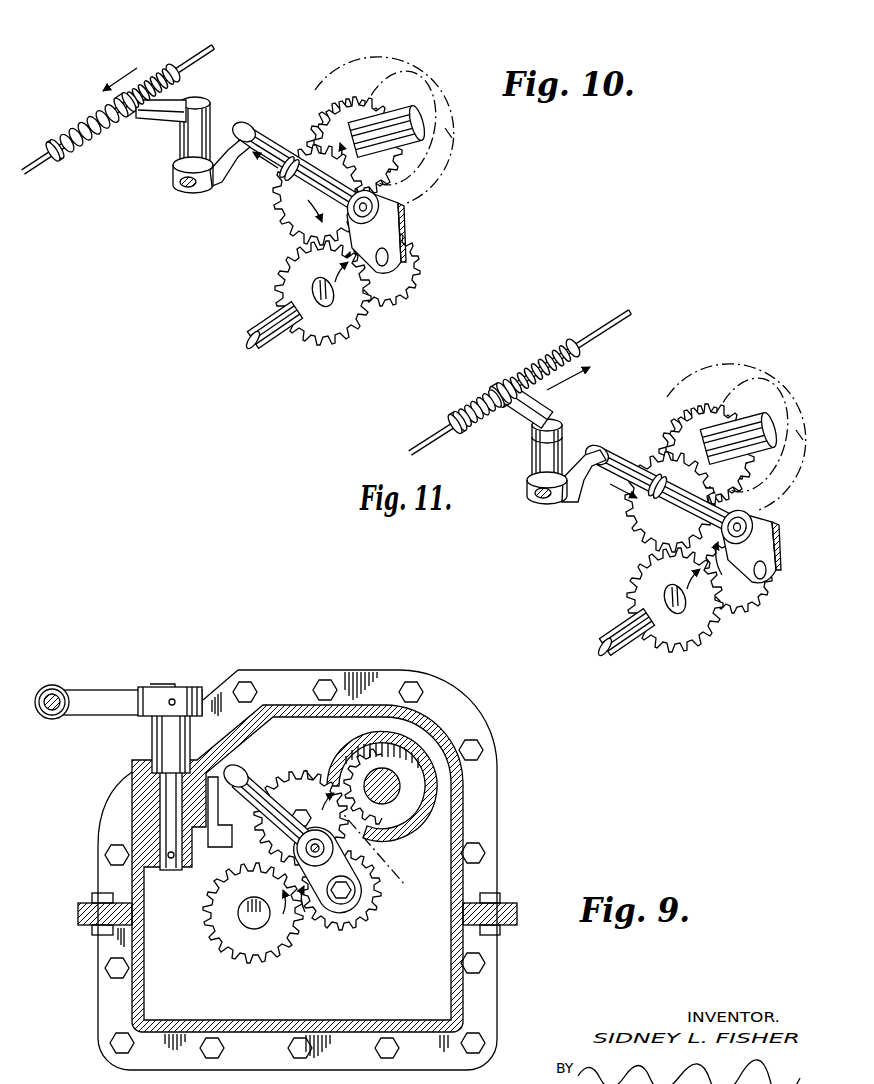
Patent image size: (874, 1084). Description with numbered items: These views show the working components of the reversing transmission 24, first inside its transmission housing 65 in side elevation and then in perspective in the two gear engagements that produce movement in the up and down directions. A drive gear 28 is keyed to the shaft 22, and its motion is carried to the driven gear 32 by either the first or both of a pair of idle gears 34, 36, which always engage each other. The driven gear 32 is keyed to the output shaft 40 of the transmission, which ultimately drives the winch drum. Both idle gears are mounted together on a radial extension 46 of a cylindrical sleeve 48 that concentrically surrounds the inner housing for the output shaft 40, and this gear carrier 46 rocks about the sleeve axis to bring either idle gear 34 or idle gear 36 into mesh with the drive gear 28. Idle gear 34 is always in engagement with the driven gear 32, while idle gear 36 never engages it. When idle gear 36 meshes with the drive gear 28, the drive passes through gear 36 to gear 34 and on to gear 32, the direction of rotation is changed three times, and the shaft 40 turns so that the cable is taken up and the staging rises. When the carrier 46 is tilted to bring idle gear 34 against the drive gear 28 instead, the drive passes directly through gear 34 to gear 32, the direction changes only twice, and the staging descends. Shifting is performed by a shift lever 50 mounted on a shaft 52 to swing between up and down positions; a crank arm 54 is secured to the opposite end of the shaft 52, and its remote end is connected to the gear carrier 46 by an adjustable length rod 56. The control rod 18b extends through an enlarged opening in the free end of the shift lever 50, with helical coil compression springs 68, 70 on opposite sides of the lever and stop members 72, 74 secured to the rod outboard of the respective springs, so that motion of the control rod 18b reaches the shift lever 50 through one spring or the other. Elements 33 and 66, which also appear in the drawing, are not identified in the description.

In FIG. 10, the control rod 18b is at (213, 45).
In FIG. 11, the control rod 18b is at (616, 325).
In FIG. 9, the control rod 18b is at (64, 712).
In FIG. 10, the shaft 22 is at (256, 310).
In FIG. 11, the shaft 22 is at (623, 617).
In FIG. 9, the shaft 22 is at (265, 918).
In FIG. 9, the reversing transmission 24 is at (163, 879).
In FIG. 10, the drive gear 28 is at (330, 345).
In FIG. 11, the drive gear 28 is at (700, 650).
In FIG. 9, the drive gear 28 is at (236, 945).
In FIG. 10, the driven gear 32 is at (318, 103).
In FIG. 11, the driven gear 32 is at (680, 410).
In FIG. 9, the driven gear 32 is at (400, 835).
In FIG. 10, the drum flange 33 is at (448, 122).
In FIG. 11, the drum flange 33 is at (802, 423).
In FIG. 10, the idle gear 34 is at (285, 215).
In FIG. 11, the idle gear 34 is at (650, 525).
In FIG. 9, the idle gear 34 is at (287, 778).
In FIG. 10, the idle gear 36 is at (400, 286).
In FIG. 11, the idle gear 36 is at (783, 602).
In FIG. 9, the idle gear 36 is at (356, 920).
In FIG. 10, the output shaft 40 is at (402, 103).
In FIG. 11, the output shaft 40 is at (754, 413).
In FIG. 9, the output shaft 40 is at (368, 778).
In FIG. 10, the radial extension 46 is at (385, 237).
In FIG. 11, the radial extension 46 is at (768, 548).
In FIG. 9, the radial extension 46 is at (352, 870).
In FIG. 10, the cylindrical sleeve 48 is at (378, 62).
In FIG. 11, the cylindrical sleeve 48 is at (735, 370).
In FIG. 9, the cylindrical sleeve 48 is at (440, 797).
In FIG. 10, the shift lever 50 is at (170, 108).
In FIG. 11, the shift lever 50 is at (518, 418).
In FIG. 9, the shift lever 50 is at (105, 690).
In FIG. 10, the shaft 52 is at (172, 170).
In FIG. 11, the shaft 52 is at (534, 466).
In FIG. 9, the shaft 52 is at (167, 790).
In FIG. 10, the crank arm 54 is at (232, 180).
In FIG. 11, the crank arm 54 is at (562, 502).
In FIG. 9, the crank arm 54 is at (207, 848).
In FIG. 10, the adjustable length rod 56 is at (270, 152).
In FIG. 11, the adjustable length rod 56 is at (628, 476).
In FIG. 9, the adjustable length rod 56 is at (245, 770).
In FIG. 9, the transmission housing 65 is at (465, 1002).
In FIG. 10, the collar 66 is at (132, 115).
In FIG. 11, the collar 66 is at (508, 382).
In FIG. 10, the helical coil compression spring 68 is at (160, 76).
In FIG. 11, the helical coil compression spring 68 is at (547, 362).
In FIG. 9, the helical coil compression spring 68 is at (52, 690).
In FIG. 11, the helical coil compression spring 70 is at (494, 398).
In FIG. 10, the stop member 72 is at (180, 72).
In FIG. 11, the stop member 72 is at (575, 340).
In FIG. 10, the stop member 74 is at (53, 140).
In FIG. 11, the stop member 74 is at (456, 418).